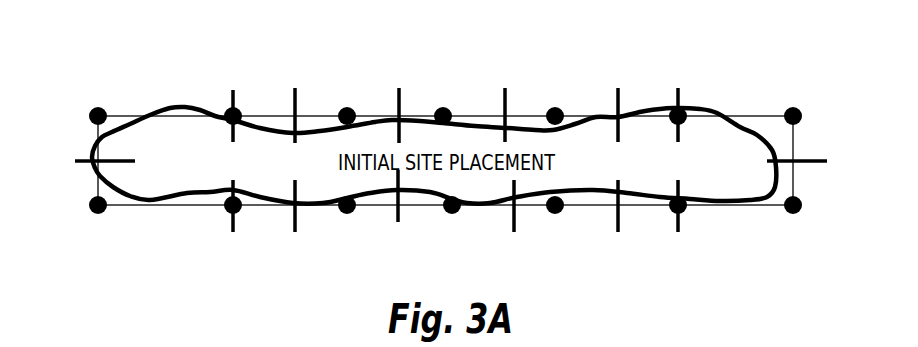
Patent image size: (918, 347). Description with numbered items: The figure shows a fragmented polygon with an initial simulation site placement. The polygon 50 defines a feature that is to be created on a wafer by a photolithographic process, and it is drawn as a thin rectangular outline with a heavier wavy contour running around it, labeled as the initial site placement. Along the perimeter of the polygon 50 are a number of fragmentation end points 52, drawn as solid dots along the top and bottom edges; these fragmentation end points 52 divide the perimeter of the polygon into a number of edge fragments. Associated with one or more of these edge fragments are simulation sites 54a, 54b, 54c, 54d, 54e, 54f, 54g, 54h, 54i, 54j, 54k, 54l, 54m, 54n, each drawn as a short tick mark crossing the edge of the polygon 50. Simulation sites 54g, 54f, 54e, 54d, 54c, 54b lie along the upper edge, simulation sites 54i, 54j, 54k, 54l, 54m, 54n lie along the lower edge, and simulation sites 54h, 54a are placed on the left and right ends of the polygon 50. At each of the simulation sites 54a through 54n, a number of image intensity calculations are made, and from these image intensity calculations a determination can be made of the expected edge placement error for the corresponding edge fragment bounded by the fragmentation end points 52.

The polygon 50 is at (761, 116).
The fragmentation end points 52 is at (94, 109).
The simulation site 54a is at (805, 164).
The simulation site 54b is at (677, 87).
The simulation site 54c is at (618, 86).
The simulation site 54d is at (506, 86).
The simulation site 54e is at (400, 86).
The simulation site 54f is at (298, 86).
The simulation site 54g is at (232, 89).
The simulation site 54h is at (83, 165).
The simulation site 54i is at (238, 230).
The simulation site 54j is at (292, 230).
The simulation site 54k is at (397, 222).
The simulation site 54l is at (513, 218).
The simulation site 54m is at (614, 218).
The simulation site 54n is at (677, 228).